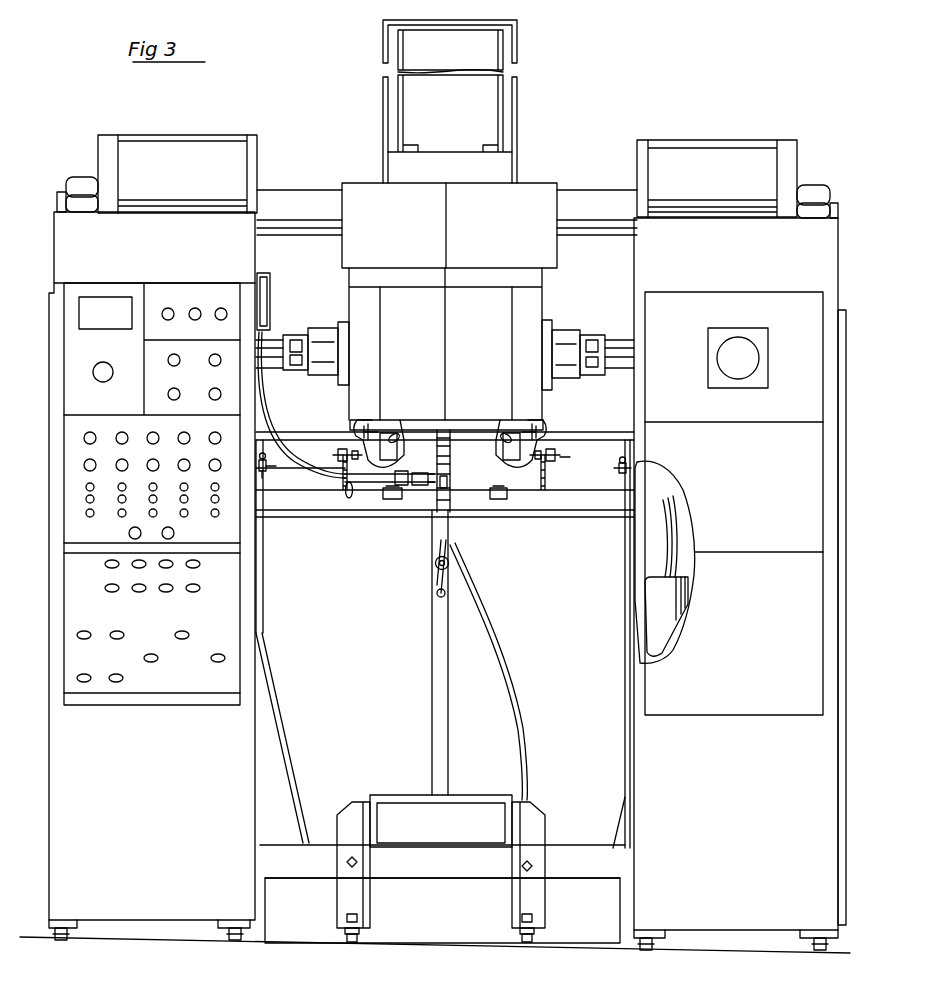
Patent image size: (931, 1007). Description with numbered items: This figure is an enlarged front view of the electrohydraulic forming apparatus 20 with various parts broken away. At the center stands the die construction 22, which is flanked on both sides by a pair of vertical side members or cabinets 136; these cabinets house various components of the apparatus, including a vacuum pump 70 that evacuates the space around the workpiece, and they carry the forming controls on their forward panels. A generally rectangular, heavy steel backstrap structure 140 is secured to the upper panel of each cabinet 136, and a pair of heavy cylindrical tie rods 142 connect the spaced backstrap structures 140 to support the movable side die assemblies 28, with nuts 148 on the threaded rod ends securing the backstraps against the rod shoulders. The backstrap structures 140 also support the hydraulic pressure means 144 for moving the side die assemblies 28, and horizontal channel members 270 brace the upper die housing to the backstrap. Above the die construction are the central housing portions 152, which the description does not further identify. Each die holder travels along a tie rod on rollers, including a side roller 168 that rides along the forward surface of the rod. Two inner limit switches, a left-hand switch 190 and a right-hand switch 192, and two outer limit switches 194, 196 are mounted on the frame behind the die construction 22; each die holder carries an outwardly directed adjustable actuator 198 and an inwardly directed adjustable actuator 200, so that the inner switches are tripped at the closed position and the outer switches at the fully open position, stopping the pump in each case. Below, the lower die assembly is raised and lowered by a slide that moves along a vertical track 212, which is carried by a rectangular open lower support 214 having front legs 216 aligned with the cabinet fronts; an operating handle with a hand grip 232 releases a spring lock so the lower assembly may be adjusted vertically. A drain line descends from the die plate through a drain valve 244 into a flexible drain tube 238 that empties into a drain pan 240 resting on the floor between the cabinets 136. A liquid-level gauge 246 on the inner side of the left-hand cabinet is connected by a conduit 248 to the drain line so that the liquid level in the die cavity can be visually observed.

The apparatus 20 is at (585, 76).
The die construction 22 is at (557, 292).
The side die assemblies 28 is at (420, 335).
The vacuum pump 70 is at (677, 611).
The side cabinets 136 is at (156, 755).
The backstrap structure 140 is at (98, 145).
The tie rods 142 is at (582, 200).
The hydraulic pressure means 144 is at (633, 333).
The nuts 148 is at (83, 183).
The drive housing 152 is at (430, 226).
The side roller 168 is at (392, 499).
The left-hand inner limit switch 190 is at (400, 440).
The right-hand inner limit switch 192 is at (487, 456).
The left-hand outer limit switch 194 is at (263, 482).
The right-hand outer limit switch 196 is at (621, 472).
The outwardly directed adjustable actuator 198 is at (335, 455).
The inwardly directed adjustable actuator 200 is at (378, 432).
The vertical track 212 is at (440, 650).
The lower support 214 is at (403, 795).
The front legs 216 is at (345, 895).
The hand grip 232 is at (437, 581).
The flexible drain tube 238 is at (503, 653).
The drain pan 240 is at (456, 913).
The drain valve 244 is at (440, 512).
The liquid-level gauge 246 is at (272, 281).
The conduit 248 is at (272, 386).
The horizontal channel members 270 is at (608, 470).